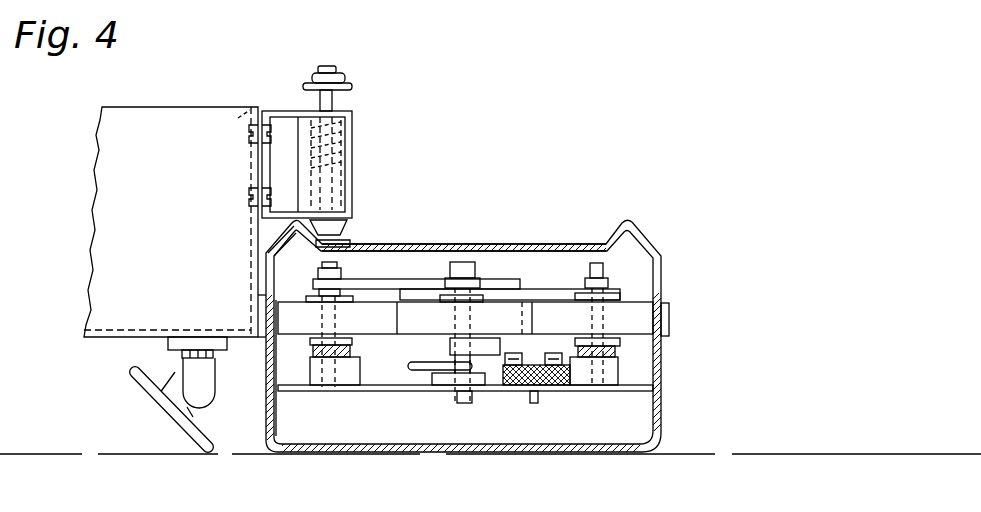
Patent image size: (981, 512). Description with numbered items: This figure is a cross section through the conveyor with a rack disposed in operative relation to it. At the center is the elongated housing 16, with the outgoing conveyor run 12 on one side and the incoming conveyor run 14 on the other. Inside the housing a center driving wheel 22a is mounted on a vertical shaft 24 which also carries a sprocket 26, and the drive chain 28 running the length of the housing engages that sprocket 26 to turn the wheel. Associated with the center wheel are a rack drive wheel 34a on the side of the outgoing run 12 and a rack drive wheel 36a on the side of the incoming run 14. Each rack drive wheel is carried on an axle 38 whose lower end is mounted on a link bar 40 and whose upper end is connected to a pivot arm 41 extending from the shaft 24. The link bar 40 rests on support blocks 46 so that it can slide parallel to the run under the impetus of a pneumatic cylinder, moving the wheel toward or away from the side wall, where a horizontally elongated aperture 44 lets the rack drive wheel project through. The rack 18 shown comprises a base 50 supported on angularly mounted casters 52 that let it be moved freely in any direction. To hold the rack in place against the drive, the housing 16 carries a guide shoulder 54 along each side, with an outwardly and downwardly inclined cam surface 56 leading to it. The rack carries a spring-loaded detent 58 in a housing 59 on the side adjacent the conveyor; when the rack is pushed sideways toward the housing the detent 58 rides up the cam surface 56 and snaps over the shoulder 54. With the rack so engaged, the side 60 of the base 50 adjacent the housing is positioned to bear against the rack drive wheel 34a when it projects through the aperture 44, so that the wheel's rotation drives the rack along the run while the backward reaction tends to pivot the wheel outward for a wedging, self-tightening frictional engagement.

The outgoing conveyor run 12 is at (270, 230).
The incoming conveyor run 14 is at (670, 273).
The elongated housing 16 is at (445, 243).
The rack 18 is at (178, 277).
The center driving wheel 22a is at (503, 312).
The vertical shaft 24 is at (464, 403).
The sprocket 26 is at (412, 378).
The drive chain 28 is at (555, 386).
The rack drive wheel 34a is at (288, 333).
The rack drive wheel 36a is at (670, 320).
The axle 38 is at (337, 321).
The link bar 40 is at (348, 351).
The pivot arm 41 is at (423, 278).
The aperture 44 is at (270, 330).
The support block 46 is at (336, 378).
The base 50 is at (118, 328).
The caster 52 is at (157, 413).
The guide shoulder 54 is at (302, 238).
The cam surface 56 is at (288, 218).
The spring-loaded detent 58 is at (350, 228).
The detent housing 59 is at (353, 147).
The side of base 60 is at (258, 312).